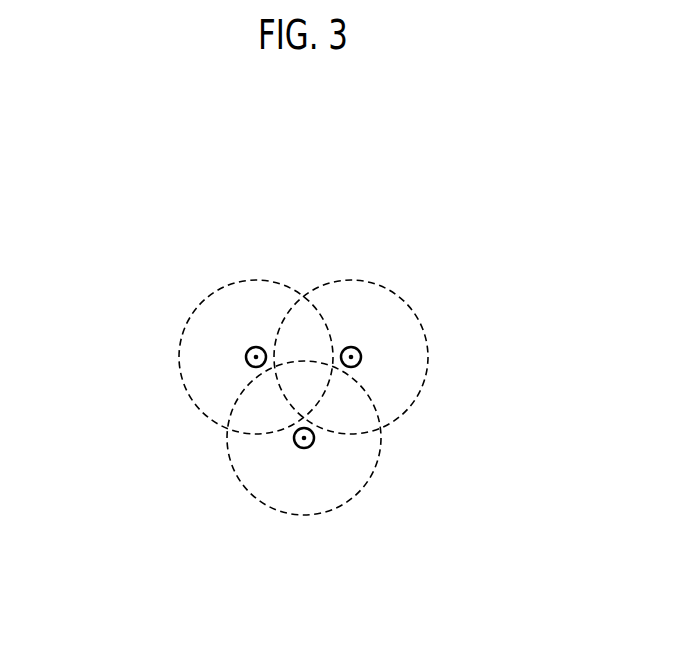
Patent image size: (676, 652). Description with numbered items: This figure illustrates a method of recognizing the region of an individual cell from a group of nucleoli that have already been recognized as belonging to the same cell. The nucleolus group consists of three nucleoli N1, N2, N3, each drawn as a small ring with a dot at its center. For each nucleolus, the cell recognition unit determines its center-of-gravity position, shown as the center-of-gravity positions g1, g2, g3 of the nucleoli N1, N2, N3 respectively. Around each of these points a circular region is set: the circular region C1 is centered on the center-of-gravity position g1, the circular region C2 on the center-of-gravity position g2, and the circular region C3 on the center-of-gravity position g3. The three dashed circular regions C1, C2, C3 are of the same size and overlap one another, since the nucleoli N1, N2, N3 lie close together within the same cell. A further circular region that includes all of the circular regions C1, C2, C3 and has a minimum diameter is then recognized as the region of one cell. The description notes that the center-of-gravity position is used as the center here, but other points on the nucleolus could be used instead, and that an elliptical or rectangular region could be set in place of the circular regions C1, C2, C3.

The circular region C1 is at (179, 357).
The circular region C2 is at (428, 357).
The circular region C3 is at (364, 486).
The nucleolus N1 is at (246, 352).
The nucleolus N2 is at (361, 352).
The nucleolus N3 is at (311, 445).
The center-of-gravity position g1 is at (254, 347).
The center-of-gravity position g2 is at (353, 347).
The center-of-gravity position g3 is at (306, 448).